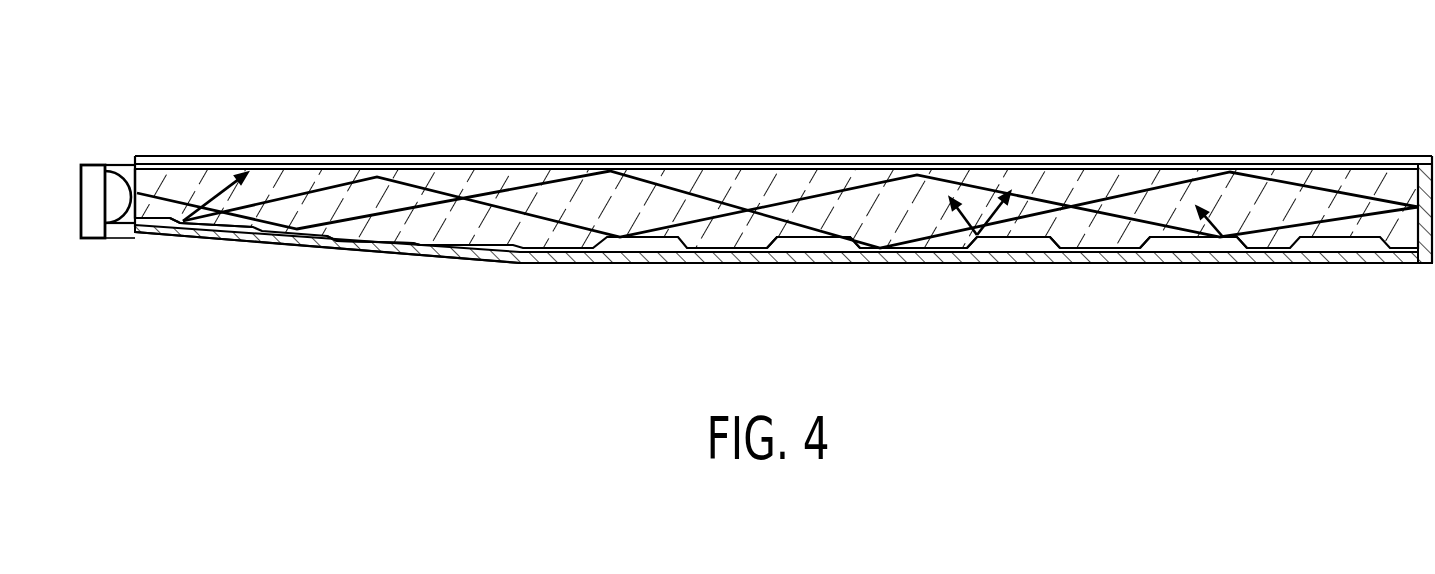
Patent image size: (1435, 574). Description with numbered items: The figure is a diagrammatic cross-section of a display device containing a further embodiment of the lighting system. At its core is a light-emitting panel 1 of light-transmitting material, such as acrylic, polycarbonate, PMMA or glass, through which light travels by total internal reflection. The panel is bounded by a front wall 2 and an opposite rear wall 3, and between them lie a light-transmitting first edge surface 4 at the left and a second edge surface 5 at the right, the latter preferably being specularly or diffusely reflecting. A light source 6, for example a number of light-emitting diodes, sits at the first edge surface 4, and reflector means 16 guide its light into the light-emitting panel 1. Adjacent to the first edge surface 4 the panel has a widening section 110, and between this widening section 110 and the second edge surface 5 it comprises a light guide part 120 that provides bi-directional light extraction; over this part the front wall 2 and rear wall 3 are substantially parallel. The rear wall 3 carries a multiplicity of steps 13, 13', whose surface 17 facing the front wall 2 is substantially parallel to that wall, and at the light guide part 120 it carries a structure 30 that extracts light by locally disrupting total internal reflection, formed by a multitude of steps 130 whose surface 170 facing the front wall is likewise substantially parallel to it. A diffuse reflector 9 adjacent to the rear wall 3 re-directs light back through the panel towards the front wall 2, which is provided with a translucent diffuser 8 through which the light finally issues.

The light-emitting panel 1 is at (571, 190).
The front wall 2 is at (270, 167).
The rear wall 3 is at (893, 258).
The first edge surface 4 is at (163, 180).
The second edge surface 5 is at (1420, 228).
The light source 6 is at (93, 240).
The translucent diffuser 8 is at (1230, 167).
The diffuse reflector 9 is at (1256, 258).
The step 13 is at (211, 272).
The step 13' is at (314, 284).
The reflector means 16 is at (120, 167).
The surface of steps facing the front wall 17 is at (384, 233).
The structure 30 is at (1154, 261).
The widening section 110 is at (358, 190).
The light guide part 120 is at (1098, 200).
The steps 130 is at (818, 244).
The surface facing the front wall 170 is at (1032, 232).